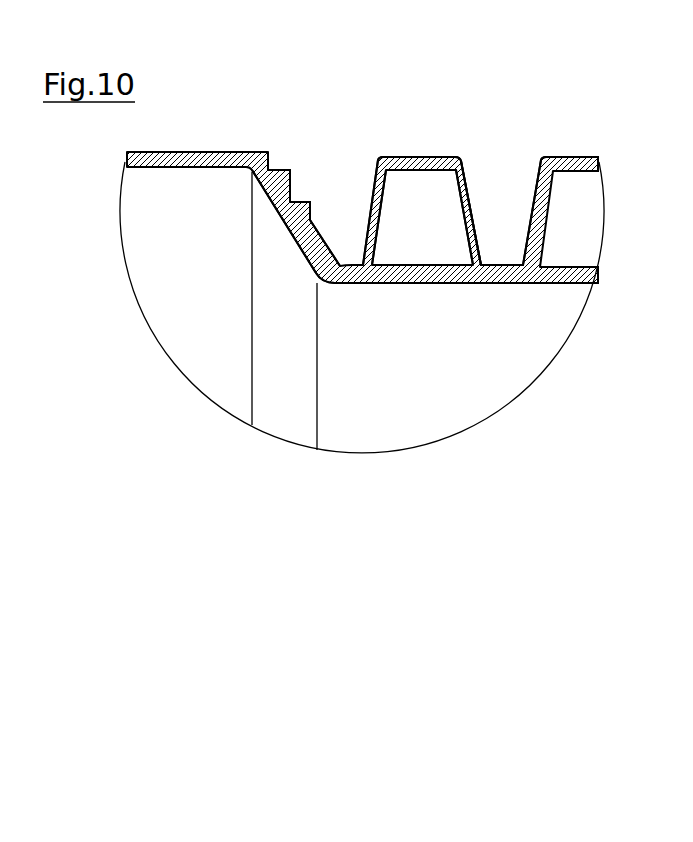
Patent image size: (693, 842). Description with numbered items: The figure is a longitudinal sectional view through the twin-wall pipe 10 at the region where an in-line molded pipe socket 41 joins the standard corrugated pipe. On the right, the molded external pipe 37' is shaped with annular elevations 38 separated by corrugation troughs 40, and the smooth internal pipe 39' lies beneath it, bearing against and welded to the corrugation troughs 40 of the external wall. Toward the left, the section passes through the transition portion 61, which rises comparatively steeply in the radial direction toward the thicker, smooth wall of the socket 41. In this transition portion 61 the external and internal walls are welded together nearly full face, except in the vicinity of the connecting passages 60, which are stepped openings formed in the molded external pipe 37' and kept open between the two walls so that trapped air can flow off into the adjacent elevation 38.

The twin-wall pipe 10 is at (578, 138).
The pipe socket 41 is at (184, 153).
The connecting passages 60 is at (297, 213).
The transition portion 61 is at (319, 229).
The annular elevations 38 is at (410, 215).
The corrugation troughs 40 is at (502, 265).
The molded external pipe 37' is at (605, 148).
The smooth internal pipe 39' is at (493, 285).